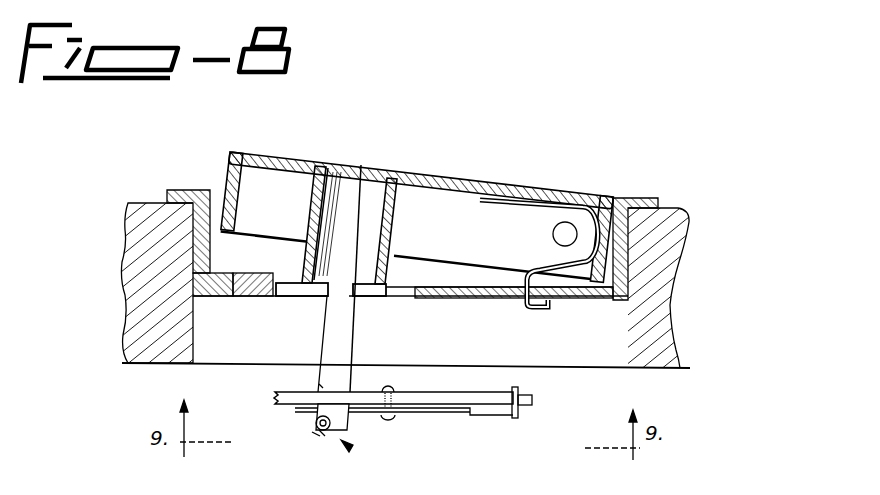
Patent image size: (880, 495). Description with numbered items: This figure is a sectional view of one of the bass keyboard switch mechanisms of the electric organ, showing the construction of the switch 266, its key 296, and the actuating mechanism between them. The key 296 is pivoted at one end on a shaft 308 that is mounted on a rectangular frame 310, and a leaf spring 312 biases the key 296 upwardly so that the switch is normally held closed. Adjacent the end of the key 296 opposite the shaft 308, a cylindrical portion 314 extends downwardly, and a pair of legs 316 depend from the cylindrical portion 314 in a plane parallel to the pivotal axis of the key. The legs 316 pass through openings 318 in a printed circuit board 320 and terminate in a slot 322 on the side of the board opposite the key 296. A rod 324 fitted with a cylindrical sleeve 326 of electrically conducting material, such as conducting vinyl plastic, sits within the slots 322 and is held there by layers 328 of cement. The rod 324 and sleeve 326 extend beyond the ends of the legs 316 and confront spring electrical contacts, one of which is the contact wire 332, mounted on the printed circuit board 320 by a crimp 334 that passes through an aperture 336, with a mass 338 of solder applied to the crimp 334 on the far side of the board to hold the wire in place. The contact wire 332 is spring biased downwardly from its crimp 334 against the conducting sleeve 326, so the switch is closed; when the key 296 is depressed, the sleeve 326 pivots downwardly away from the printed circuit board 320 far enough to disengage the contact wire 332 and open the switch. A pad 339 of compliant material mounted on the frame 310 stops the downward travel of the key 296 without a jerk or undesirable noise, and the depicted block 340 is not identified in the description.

The switch 266 is at (347, 446).
The key 296 is at (418, 203).
The shaft 308 is at (556, 243).
The rectangular frame 310 is at (197, 243).
The leaf spring 312 is at (547, 210).
The cylindrical portion 314 is at (308, 208).
The legs 316 is at (322, 336).
The openings 318 is at (317, 384).
The printed circuit board 320 is at (533, 400).
The slot 322 is at (345, 430).
The rod 324 is at (314, 434).
The cylindrical sleeve 326 is at (316, 425).
The layers of cement 328 is at (322, 434).
The spring electrical contact 332 is at (472, 416).
The crimp 334 is at (390, 416).
The aperture 336 is at (410, 394).
The mass of solder 338 is at (392, 389).
The pad 339 is at (247, 258).
The block 340 is at (140, 272).